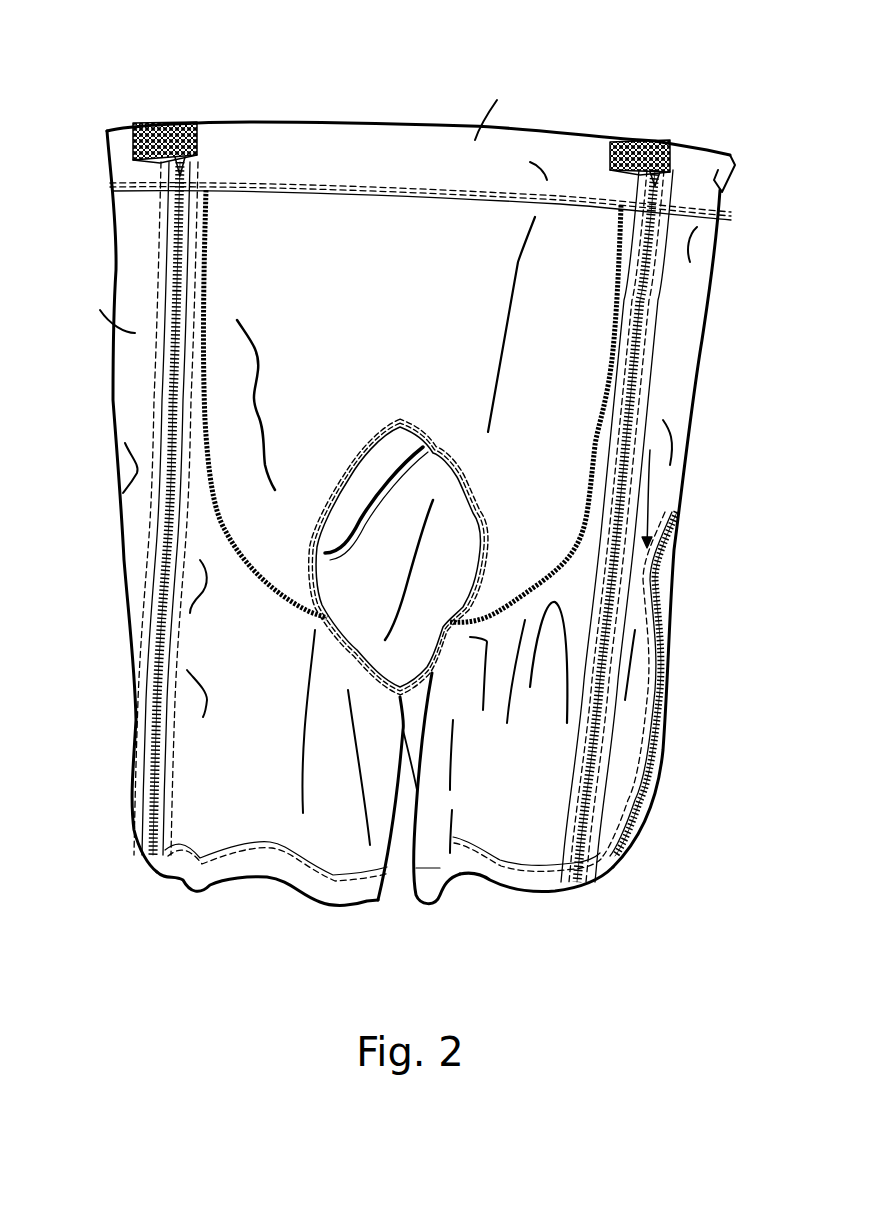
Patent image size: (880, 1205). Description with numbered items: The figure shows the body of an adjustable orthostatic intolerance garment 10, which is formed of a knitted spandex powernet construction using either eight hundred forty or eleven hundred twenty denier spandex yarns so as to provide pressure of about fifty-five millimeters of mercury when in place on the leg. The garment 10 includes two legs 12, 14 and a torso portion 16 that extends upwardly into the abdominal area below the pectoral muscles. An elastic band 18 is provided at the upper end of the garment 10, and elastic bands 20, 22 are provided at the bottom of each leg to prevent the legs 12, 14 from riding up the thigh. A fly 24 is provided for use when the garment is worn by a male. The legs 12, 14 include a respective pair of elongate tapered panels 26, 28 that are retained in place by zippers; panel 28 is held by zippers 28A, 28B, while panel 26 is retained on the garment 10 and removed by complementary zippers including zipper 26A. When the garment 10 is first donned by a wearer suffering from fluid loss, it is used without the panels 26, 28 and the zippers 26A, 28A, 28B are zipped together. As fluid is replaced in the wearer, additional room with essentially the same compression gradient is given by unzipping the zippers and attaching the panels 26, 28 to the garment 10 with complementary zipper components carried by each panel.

The garment 10 is at (275, 88).
The leg 12 is at (200, 772).
The leg 14 is at (540, 753).
The torso portion 16 is at (585, 258).
The elastic band 18 is at (472, 140).
The elastic band 20 is at (230, 874).
The elastic band 22 is at (515, 880).
The fly 24 is at (396, 584).
The elongate tapered panel 26 is at (130, 335).
The zipper 26A is at (163, 606).
The elongate tapered panel 28 is at (660, 493).
The zipper 28A is at (643, 380).
The zipper 28B is at (663, 633).